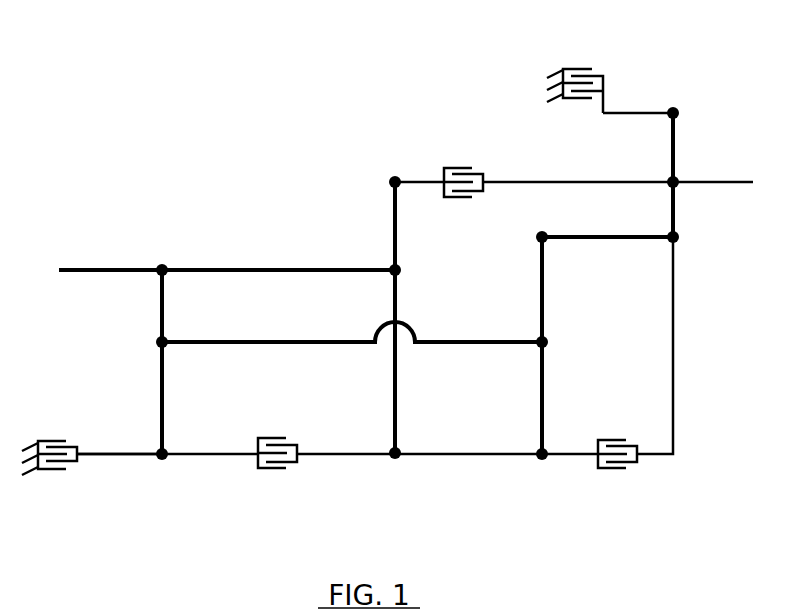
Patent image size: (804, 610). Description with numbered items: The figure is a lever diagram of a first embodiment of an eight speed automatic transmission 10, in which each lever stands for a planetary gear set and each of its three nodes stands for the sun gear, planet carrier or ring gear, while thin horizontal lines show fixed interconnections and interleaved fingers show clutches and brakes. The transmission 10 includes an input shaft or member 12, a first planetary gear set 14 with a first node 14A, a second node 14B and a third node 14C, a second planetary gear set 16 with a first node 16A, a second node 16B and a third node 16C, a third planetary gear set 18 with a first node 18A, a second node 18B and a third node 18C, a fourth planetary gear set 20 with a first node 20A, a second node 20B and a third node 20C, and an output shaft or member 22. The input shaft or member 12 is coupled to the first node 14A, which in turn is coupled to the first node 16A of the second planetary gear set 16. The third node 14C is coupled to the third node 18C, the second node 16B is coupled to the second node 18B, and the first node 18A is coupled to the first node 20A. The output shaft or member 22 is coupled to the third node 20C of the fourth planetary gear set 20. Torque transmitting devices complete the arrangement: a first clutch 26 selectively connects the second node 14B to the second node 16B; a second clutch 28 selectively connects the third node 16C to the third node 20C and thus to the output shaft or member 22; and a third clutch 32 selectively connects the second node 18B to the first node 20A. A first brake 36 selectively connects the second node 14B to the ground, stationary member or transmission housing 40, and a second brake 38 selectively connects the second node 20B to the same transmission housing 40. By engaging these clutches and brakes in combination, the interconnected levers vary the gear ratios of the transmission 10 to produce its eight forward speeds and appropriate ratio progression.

The eight speed automatic transmission 10 is at (448, 68).
The input shaft or member 12 is at (98, 268).
The first planetary gear set 14 is at (168, 391).
The first node 14A is at (165, 265).
The second node 14B is at (158, 450).
The third node 14C is at (168, 345).
The second planetary gear set 16 is at (352, 357).
The first node 16A is at (392, 268).
The second node 16B is at (400, 450).
The third node 16C is at (392, 180).
The third planetary gear set 18 is at (586, 399).
The first node 18A is at (546, 241).
The second node 18B is at (547, 458).
The third node 18C is at (547, 340).
The fourth planetary gear set 20 is at (678, 262).
The first node 20A is at (676, 240).
The second node 20B is at (676, 110).
The third node 20C is at (670, 180).
The output shaft or member 22 is at (727, 185).
The first clutch 26 is at (273, 470).
The second clutch 28 is at (462, 166).
The third clutch 32 is at (608, 437).
The first brake 36 is at (64, 438).
The second brake 38 is at (574, 68).
The ground, stationary member, or transmission housing 40 is at (38, 472).